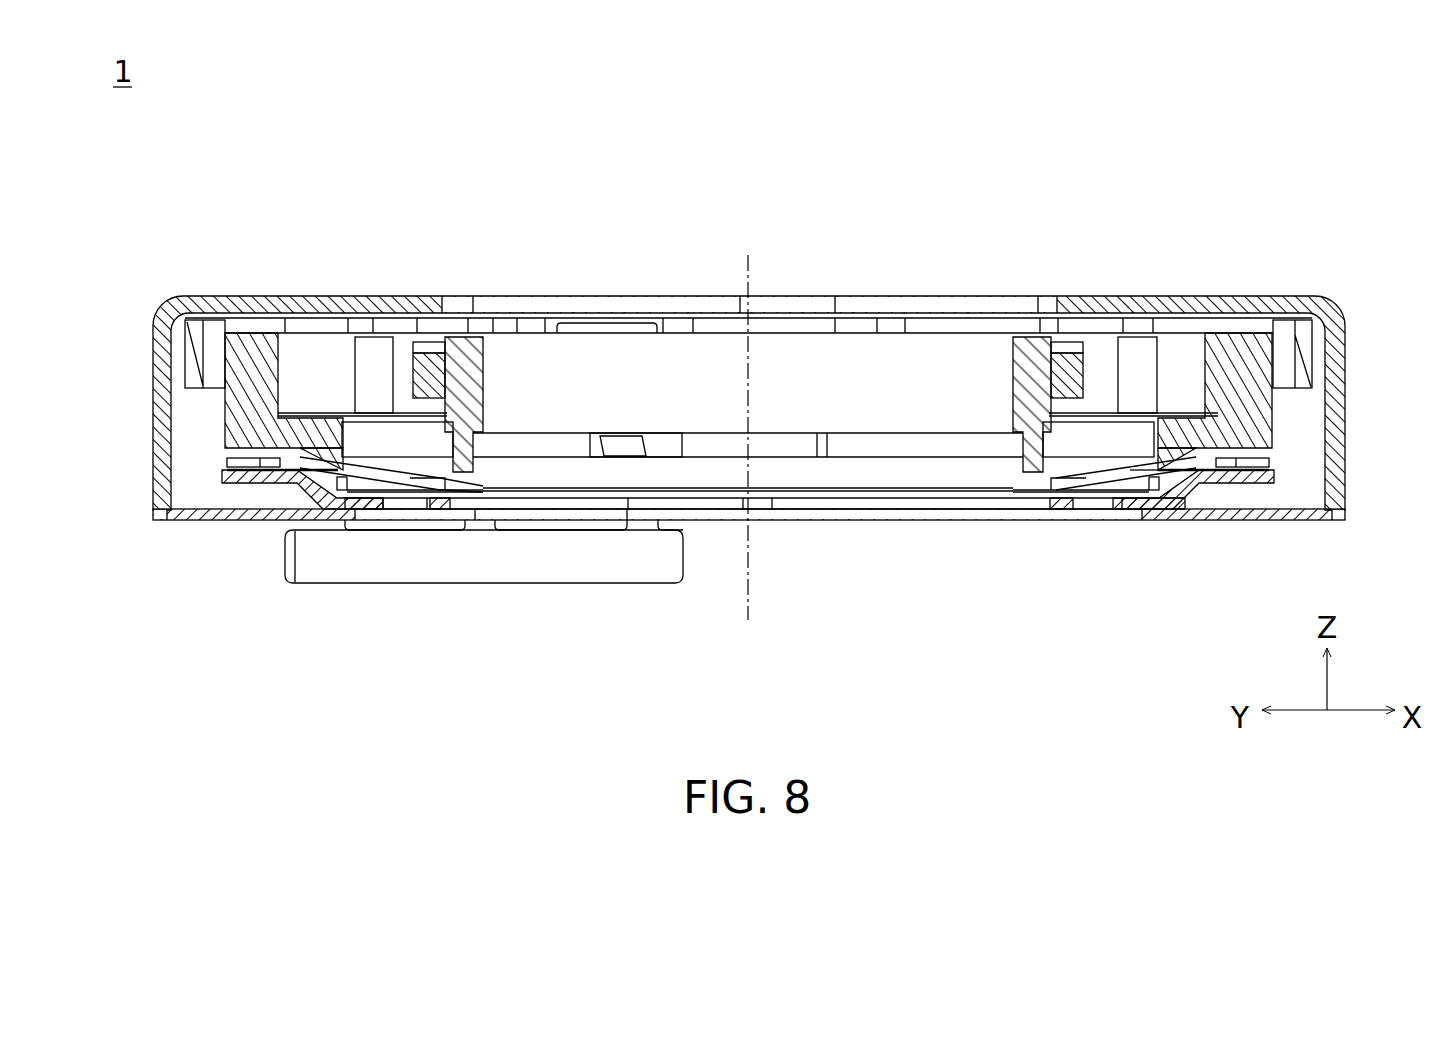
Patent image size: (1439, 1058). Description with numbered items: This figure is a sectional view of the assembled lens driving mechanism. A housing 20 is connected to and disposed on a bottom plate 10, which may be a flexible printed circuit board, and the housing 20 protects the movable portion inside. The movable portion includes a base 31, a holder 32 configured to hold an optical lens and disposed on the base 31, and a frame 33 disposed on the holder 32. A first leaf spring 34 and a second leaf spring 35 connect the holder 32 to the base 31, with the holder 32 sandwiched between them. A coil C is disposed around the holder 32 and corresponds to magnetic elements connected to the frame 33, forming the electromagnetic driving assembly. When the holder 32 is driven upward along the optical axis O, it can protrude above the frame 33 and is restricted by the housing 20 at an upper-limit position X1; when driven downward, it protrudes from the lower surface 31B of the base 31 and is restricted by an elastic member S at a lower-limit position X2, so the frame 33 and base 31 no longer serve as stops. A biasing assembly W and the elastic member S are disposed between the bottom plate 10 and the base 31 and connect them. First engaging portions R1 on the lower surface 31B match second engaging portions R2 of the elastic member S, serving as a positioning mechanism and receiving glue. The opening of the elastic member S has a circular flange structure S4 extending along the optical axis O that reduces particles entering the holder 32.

The bottom plate 10 is at (200, 521).
The housing 20 is at (162, 478).
The base 31 is at (247, 423).
The lower surface 31B is at (1130, 472).
The holder 32 is at (470, 360).
The frame 33 is at (193, 358).
The first leaf spring 34 is at (307, 340).
The second leaf spring 35 is at (297, 490).
The coil C is at (430, 365).
The first engaging portion R1 is at (425, 495).
The second engaging portion R2 is at (417, 480).
The elastic member S is at (490, 472).
The flange structure S4 is at (512, 470).
The biasing assembly W is at (330, 505).
The upper-limit position X1 is at (1340, 310).
The lower-limit position X2 is at (1015, 478).
The optical axis O is at (750, 422).